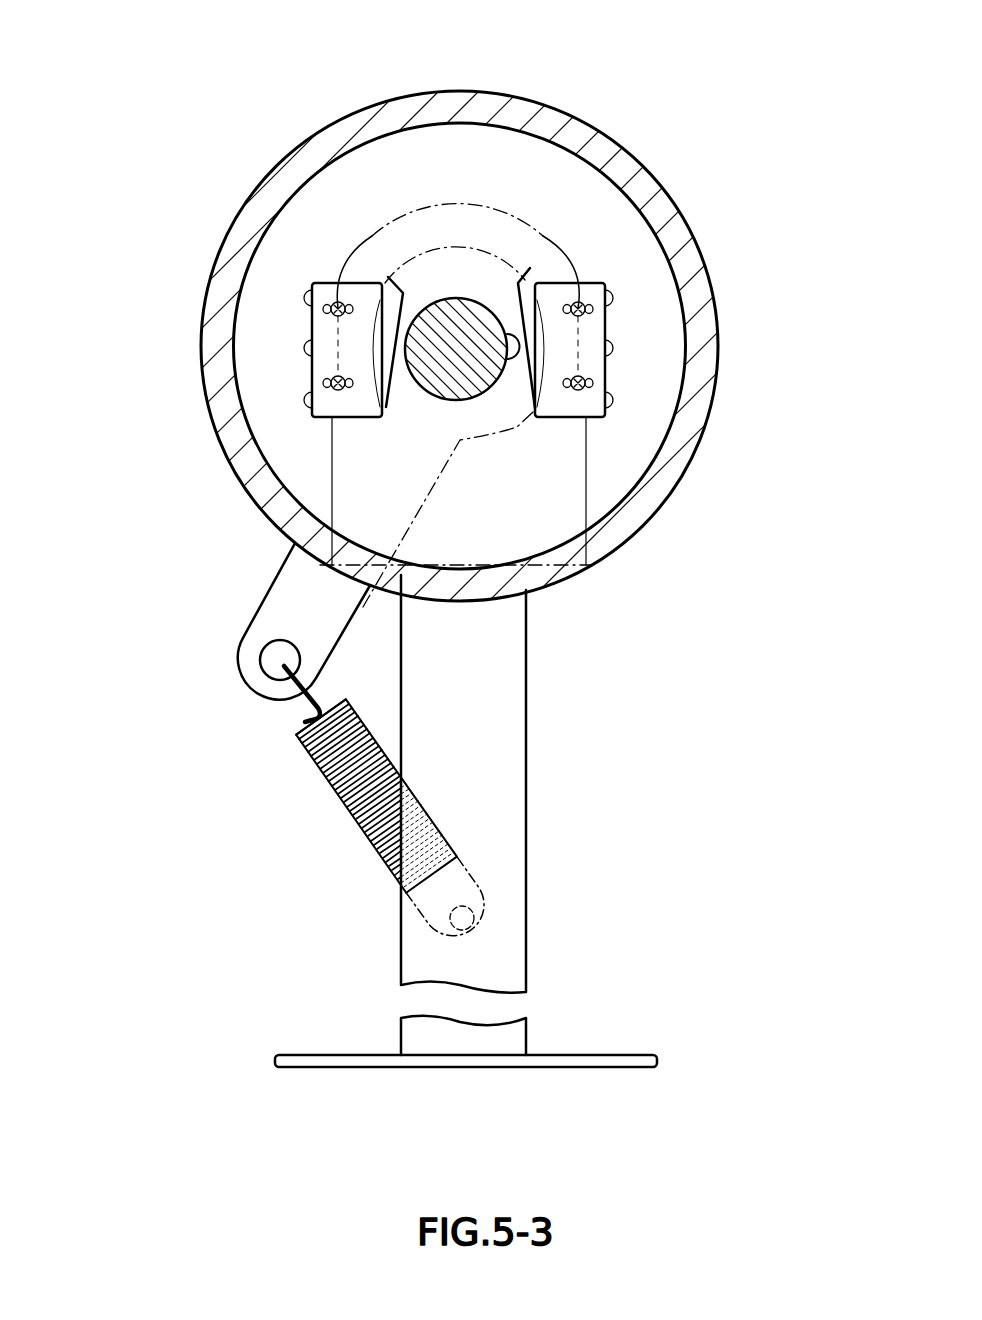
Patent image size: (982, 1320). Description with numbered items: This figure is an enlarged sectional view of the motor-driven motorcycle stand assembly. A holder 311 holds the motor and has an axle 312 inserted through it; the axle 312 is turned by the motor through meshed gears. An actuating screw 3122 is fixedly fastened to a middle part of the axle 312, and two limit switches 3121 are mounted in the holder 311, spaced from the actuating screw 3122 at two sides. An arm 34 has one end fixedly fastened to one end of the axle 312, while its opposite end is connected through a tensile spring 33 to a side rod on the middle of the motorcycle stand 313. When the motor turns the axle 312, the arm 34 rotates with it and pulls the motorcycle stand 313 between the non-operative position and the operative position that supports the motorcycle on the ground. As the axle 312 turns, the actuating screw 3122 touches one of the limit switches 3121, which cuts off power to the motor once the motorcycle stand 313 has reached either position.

The holder 311 is at (707, 322).
The axle 312 is at (453, 310).
The limit switch 3121 is at (312, 283).
The actuating screw 3122 is at (535, 414).
The motorcycle stand 313 is at (500, 772).
The arm 34 is at (268, 588).
The tensile spring 33 is at (337, 800).